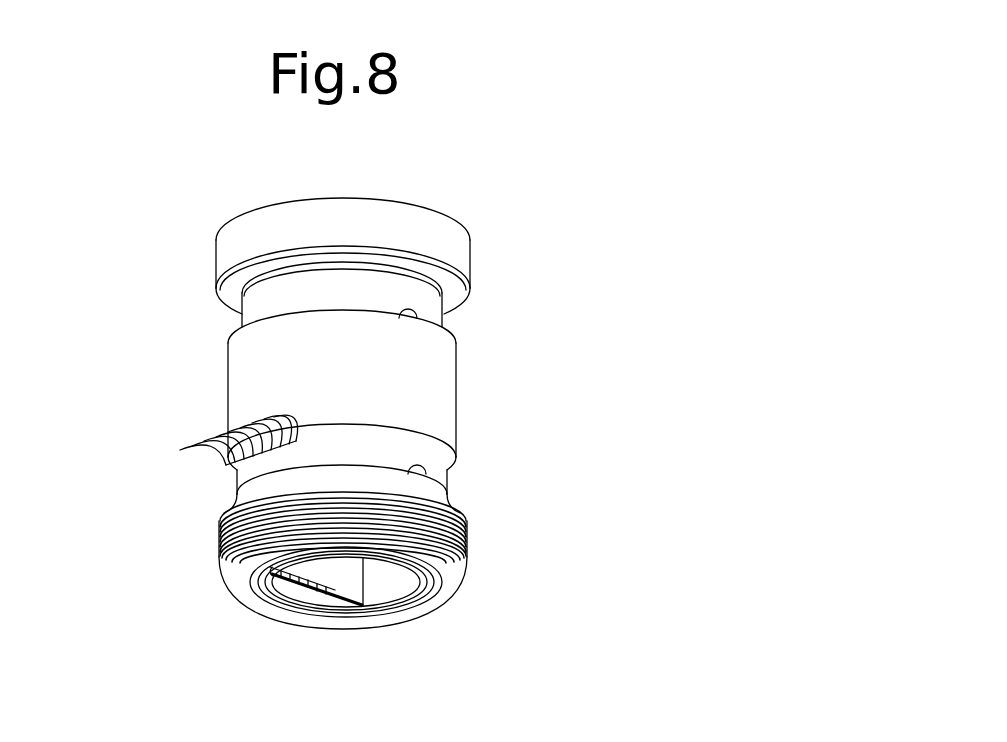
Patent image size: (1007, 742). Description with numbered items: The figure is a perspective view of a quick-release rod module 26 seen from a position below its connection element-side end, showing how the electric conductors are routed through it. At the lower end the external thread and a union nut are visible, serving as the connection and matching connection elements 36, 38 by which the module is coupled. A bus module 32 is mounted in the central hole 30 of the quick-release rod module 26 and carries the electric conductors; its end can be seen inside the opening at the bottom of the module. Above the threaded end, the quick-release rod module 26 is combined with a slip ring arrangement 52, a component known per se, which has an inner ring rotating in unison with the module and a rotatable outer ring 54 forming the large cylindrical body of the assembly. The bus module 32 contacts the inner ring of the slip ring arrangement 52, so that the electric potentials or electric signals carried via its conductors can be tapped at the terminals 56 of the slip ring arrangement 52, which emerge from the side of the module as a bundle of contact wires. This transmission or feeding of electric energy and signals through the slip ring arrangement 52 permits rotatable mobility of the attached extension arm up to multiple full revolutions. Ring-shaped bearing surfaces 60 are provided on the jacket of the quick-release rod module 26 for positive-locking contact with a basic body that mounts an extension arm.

The quick-release rod module 26 is at (499, 206).
The central hole 30 is at (382, 577).
The bus module 32 is at (337, 565).
The connection element 36 is at (478, 569).
The matching connection element 38 is at (297, 237).
The slip ring arrangement 52 is at (192, 372).
The rotatable outer ring 54 is at (417, 383).
The terminals 56 is at (168, 458).
The bearing surfaces 60 is at (415, 293).